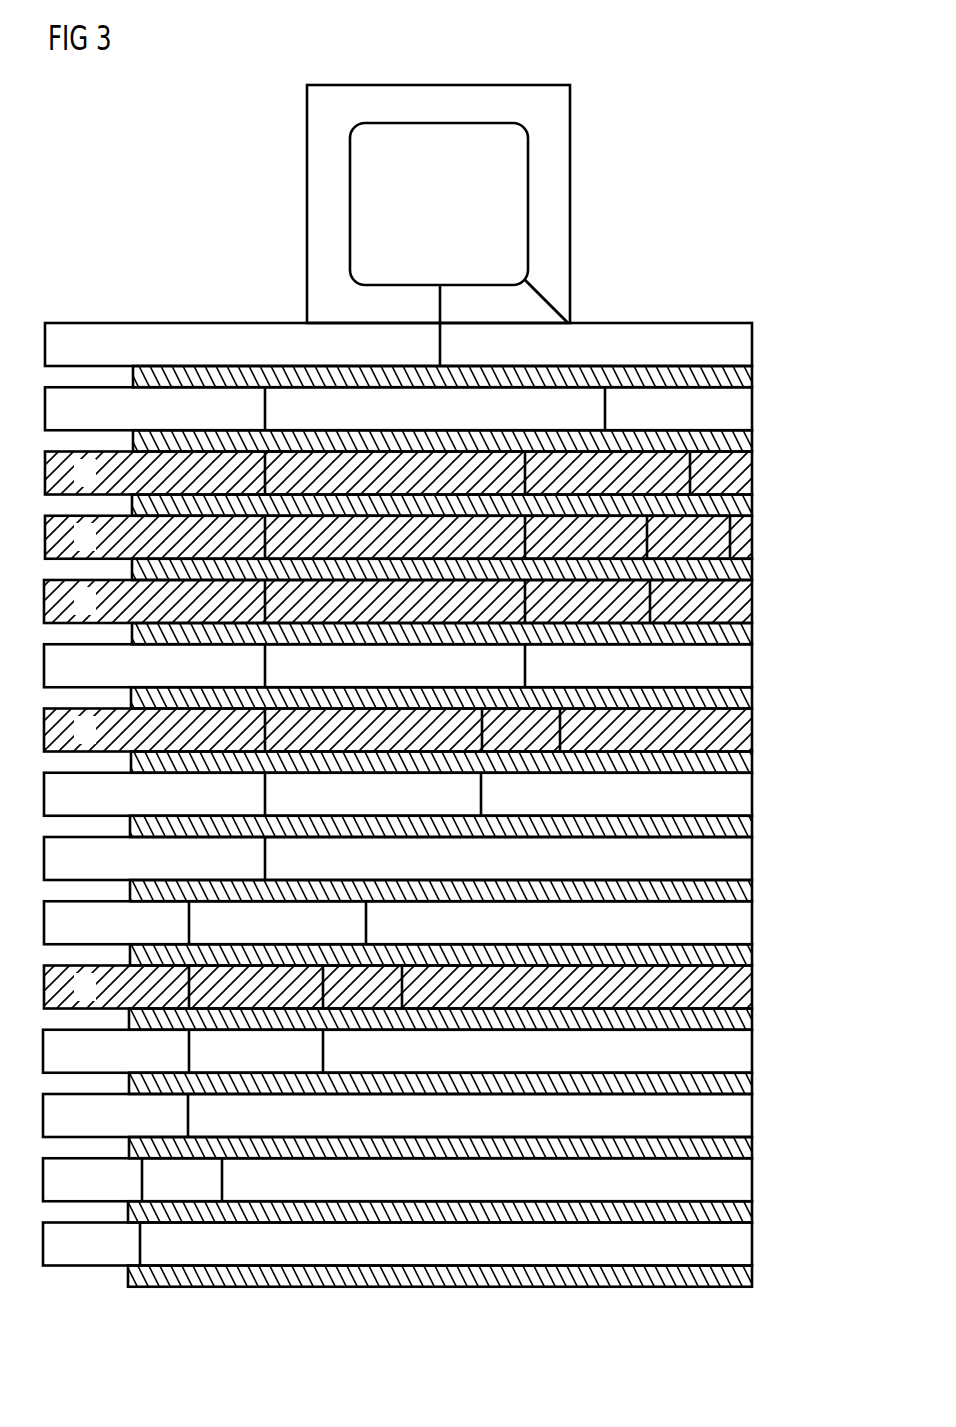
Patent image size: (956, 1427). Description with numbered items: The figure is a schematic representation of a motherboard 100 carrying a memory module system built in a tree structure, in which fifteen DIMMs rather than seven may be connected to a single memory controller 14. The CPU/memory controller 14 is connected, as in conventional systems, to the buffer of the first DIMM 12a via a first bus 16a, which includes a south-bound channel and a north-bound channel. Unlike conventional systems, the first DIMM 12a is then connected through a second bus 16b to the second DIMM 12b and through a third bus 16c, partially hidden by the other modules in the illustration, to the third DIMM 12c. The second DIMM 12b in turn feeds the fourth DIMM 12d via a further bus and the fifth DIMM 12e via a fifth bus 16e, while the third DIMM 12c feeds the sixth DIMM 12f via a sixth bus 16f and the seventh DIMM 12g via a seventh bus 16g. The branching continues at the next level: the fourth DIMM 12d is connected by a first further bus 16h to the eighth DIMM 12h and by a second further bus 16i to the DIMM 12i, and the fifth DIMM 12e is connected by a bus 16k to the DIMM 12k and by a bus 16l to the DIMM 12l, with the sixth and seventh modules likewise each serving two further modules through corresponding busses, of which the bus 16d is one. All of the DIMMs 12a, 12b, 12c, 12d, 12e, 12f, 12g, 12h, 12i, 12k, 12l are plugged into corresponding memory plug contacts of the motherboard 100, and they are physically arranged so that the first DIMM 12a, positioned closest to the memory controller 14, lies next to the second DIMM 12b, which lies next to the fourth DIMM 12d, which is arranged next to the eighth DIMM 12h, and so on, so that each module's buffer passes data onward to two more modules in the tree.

The motherboard 100 is at (750, 196).
The memory controller 14 is at (440, 85).
The first bus 16a is at (443, 344).
The second bus 16b is at (608, 410).
The third bus 16c is at (268, 410).
The bus 16d is at (692, 466).
The fifth bus 16e is at (535, 470).
The sixth bus 16f is at (369, 921).
The seventh bus 16g is at (192, 921).
The first further bus 16h is at (733, 536).
The second further bus 16i is at (652, 596).
The bus 16k is at (566, 727).
The bus 16l is at (484, 795).
The first DIMM 12a is at (746, 375).
The second DIMM 12b is at (746, 438).
The third DIMM 12c is at (746, 886).
The fourth DIMM 12d is at (746, 501).
The fifth DIMM 12e is at (746, 694).
The sixth DIMM 12f is at (746, 951).
The seventh DIMM 12g is at (746, 1141).
The eighth DIMM 12h is at (746, 565).
The DIMM 12i is at (746, 629).
The DIMM 12k is at (746, 757).
The DIMM 12l is at (746, 822).